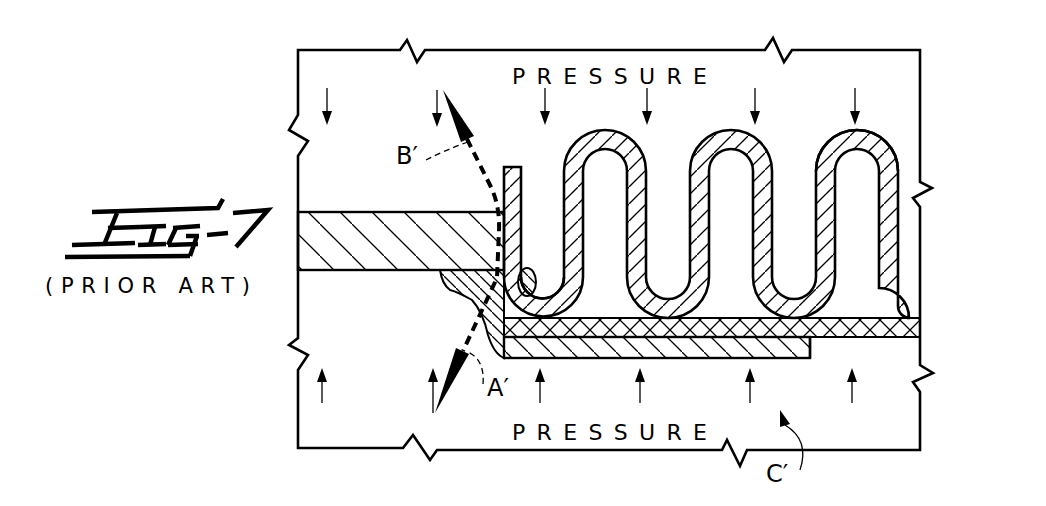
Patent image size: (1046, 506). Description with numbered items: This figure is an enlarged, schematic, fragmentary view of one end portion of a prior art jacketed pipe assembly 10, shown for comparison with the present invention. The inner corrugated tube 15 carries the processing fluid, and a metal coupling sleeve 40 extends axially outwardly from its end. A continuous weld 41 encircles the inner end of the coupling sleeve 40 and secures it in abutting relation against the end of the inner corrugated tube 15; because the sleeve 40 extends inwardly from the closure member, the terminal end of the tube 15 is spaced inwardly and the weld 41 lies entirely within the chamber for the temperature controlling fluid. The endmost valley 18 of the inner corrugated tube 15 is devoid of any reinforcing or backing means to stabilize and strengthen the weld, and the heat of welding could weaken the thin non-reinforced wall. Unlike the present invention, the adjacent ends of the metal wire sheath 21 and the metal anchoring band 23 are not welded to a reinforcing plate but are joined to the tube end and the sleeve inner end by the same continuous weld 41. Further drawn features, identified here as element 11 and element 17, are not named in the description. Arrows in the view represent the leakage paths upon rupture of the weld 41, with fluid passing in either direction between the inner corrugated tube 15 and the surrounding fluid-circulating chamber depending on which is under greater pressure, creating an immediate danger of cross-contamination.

The jacketed pipe assembly 10 is at (278, 81).
The bellows 11 is at (770, 121).
The inner corrugated tube 15 is at (872, 132).
The seal strip 17 is at (705, 310).
The endmost valley 18 is at (743, 302).
The metal wire sheath 21 is at (614, 317).
The metal anchoring band 23 is at (792, 346).
The metal coupling sleeve 40 is at (372, 216).
The continuous weld 41 is at (549, 257).